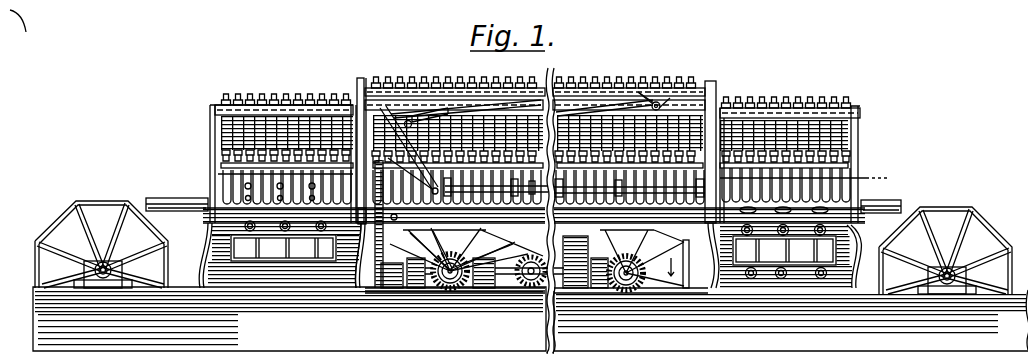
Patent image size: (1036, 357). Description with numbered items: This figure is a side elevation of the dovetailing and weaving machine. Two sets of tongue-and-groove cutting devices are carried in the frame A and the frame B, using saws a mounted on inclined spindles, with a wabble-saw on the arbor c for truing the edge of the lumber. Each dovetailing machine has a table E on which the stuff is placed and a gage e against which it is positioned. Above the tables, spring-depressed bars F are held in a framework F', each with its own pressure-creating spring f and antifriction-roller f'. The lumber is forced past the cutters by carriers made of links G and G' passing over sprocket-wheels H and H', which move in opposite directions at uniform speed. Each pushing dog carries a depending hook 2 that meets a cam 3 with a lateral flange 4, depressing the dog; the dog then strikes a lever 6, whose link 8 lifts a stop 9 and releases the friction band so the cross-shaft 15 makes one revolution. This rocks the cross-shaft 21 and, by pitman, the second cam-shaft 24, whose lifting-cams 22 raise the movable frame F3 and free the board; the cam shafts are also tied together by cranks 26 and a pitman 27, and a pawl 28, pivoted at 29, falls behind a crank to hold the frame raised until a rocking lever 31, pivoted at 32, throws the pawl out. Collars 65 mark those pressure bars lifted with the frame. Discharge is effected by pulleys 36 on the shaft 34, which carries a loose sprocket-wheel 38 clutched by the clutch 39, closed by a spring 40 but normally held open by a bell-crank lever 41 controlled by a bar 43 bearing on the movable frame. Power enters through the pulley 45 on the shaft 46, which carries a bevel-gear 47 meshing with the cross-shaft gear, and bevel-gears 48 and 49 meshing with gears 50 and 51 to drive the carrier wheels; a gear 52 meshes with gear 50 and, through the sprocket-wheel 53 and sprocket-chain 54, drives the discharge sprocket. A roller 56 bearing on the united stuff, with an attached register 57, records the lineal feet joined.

The framework F' is at (545, 141).
The pressure-creating spring f is at (264, 133).
The antifriction-roller f' is at (248, 216).
The spring-depressed bars F is at (518, 186).
The movable frame F3 is at (368, 80).
The register 57 is at (215, 163).
The bell-crank lever 41 is at (350, 150).
The lever 6 is at (215, 165).
The gage e is at (177, 196).
The table E is at (881, 219).
The links G is at (370, 239).
The links G' is at (945, 244).
The sprocket-wheels H is at (530, 289).
The sprocket-wheels H' is at (845, 286).
The frame A is at (267, 254).
The frame B is at (796, 256).
The roller 56 is at (235, 217).
The bar 43 is at (352, 110).
The cross-shaft 21 is at (440, 108).
The pitman 27 is at (487, 100).
The pivot 29 is at (388, 105).
The pawl 28 is at (402, 113).
The cranks 26 is at (416, 111).
The lifting-cams 22 is at (642, 100).
The cam-shaft 24 is at (665, 92).
The collars 65 is at (553, 78).
The pulleys 36 is at (413, 173).
The shaft 34 is at (478, 174).
The clutch 39 is at (366, 210).
The sprocket-wheel 38 is at (352, 210).
The spring 40 is at (385, 212).
The depending hook 2 is at (543, 67).
The rocking lever 31 is at (424, 215).
The pivot 32 is at (448, 215).
The link 8 is at (485, 250).
The stop 9 is at (497, 255).
The bevel-gear 50 is at (447, 282).
The gear 52 is at (418, 283).
The bevel-gear 48 is at (476, 282).
The bevel-gear 47 is at (512, 280).
The shaft 46 is at (538, 268).
The cross-shaft 15 is at (520, 290).
The sprocket-wheel 53 is at (380, 281).
The sprocket-chain 54 is at (385, 233).
The cam 3 is at (826, 98).
The pulley 45 is at (575, 262).
The lateral flange 4 is at (557, 262).
The bevel-gear 49 is at (602, 283).
The bevel-gear 51 is at (650, 283).
The saws a is at (746, 206).
The arbor c is at (818, 206).